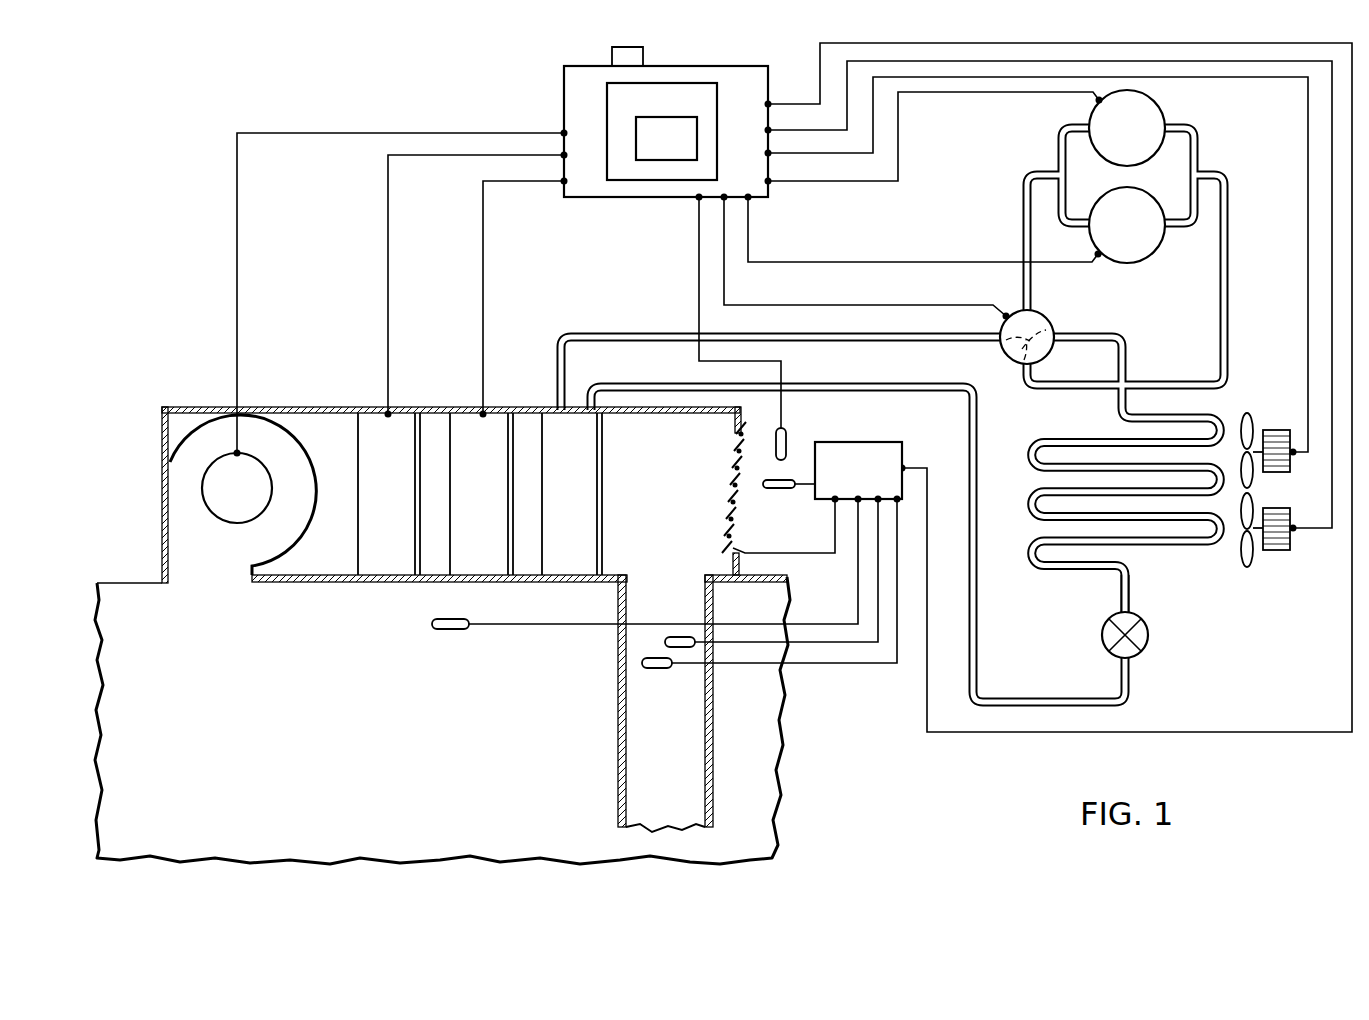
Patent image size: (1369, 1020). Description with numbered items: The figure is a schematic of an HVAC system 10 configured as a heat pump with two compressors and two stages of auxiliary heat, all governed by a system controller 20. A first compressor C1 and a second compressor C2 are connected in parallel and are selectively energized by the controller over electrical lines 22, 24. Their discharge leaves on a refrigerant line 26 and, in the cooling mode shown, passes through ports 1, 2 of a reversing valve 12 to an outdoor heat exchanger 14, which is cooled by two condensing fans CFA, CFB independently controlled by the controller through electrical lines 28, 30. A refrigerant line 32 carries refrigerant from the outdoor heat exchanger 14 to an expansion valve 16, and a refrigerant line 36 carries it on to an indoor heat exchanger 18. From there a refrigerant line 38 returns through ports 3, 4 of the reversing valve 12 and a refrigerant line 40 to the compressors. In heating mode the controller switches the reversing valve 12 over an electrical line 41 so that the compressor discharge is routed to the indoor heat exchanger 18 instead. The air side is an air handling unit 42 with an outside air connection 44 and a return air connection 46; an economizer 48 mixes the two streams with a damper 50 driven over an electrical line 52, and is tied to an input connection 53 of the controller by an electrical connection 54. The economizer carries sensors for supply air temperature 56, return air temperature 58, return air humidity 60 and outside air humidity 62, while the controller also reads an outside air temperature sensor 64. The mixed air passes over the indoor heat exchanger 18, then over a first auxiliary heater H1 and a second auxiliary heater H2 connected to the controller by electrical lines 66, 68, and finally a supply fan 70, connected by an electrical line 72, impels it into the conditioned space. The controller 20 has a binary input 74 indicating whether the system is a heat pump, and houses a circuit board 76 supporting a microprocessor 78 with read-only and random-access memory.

The HVAC system 10 is at (1192, 745).
The reversing valve 12 is at (1012, 358).
The outdoor heat exchanger 14 is at (1153, 507).
The expansion valve 16 is at (1148, 640).
The indoor heat exchanger 18 is at (584, 510).
The system controller 20 is at (564, 82).
The electrical line 22 is at (1004, 93).
The electrical line 24 is at (868, 262).
The refrigerant line 26 is at (1228, 232).
The electrical line 28 is at (1308, 330).
The electrical line 30 is at (1332, 467).
The refrigerant line 32 is at (1120, 595).
The refrigerant line 36 is at (1080, 700).
The refrigerant line 38 is at (630, 333).
The refrigerant line 40 is at (1023, 218).
The electrical line 41 is at (885, 305).
The air handling unit 42 is at (160, 452).
The outside air connection 44 is at (776, 517).
The return air connection 46 is at (680, 733).
The economizer 48 is at (872, 483).
The damper 50 is at (728, 450).
The electrical line 52 is at (800, 553).
The input connection 53 is at (768, 106).
The electrical connection 54 is at (927, 683).
The supply air temperature sensor 56 is at (456, 632).
The return air temperature sensor 58 is at (665, 641).
The return air humidity sensor 60 is at (645, 670).
The outside air humidity sensor 62 is at (766, 478).
The outside air temperature sensor 64 is at (787, 444).
The electrical line 66 is at (483, 293).
The electrical line 68 is at (388, 313).
The supply fan 70 is at (252, 501).
The electrical line 72 is at (237, 293).
The binary input 74 is at (643, 49).
The circuit board 76 is at (640, 111).
The microprocessor 78 is at (680, 152).
The port 1 is at (1057, 316).
The port 2 is at (1045, 373).
The port 3 is at (988, 351).
The port 4 is at (1010, 291).
The first compressor C1 is at (1142, 141).
The second compressor C2 is at (1142, 238).
The first auxiliary heater H1 is at (495, 510).
The second auxiliary heater H2 is at (402, 510).
The condensing fan CFA is at (1270, 430).
The condensing fan CFB is at (1270, 551).